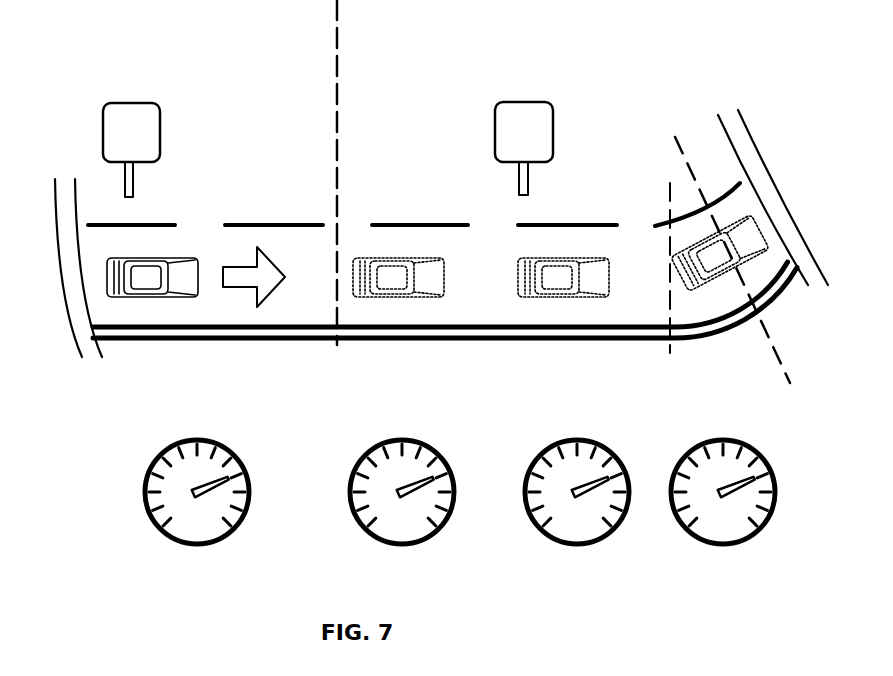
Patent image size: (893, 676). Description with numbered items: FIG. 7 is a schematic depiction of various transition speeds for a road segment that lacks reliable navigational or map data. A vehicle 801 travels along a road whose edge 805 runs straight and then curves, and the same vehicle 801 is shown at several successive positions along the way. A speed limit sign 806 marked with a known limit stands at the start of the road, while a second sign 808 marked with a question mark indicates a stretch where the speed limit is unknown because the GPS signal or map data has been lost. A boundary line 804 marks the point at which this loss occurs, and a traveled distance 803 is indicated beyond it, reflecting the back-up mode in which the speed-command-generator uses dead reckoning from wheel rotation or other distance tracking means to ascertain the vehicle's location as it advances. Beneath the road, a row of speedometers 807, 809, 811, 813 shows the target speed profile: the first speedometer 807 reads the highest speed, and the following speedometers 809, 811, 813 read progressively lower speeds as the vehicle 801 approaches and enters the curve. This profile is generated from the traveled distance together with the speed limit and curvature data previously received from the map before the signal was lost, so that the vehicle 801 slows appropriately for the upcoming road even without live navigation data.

The vehicle 801 is at (157, 258).
The travel distance / direction of travel 803 is at (670, 400).
The boundary line 804 is at (337, 36).
The road edge 805 is at (162, 333).
The speed limit sign 806 is at (122, 104).
The speedometer 807 is at (228, 548).
The unknown speed limit sign 808 is at (518, 102).
The speedometer 809 is at (400, 432).
The speedometer 811 is at (553, 432).
The speedometer 813 is at (737, 433).